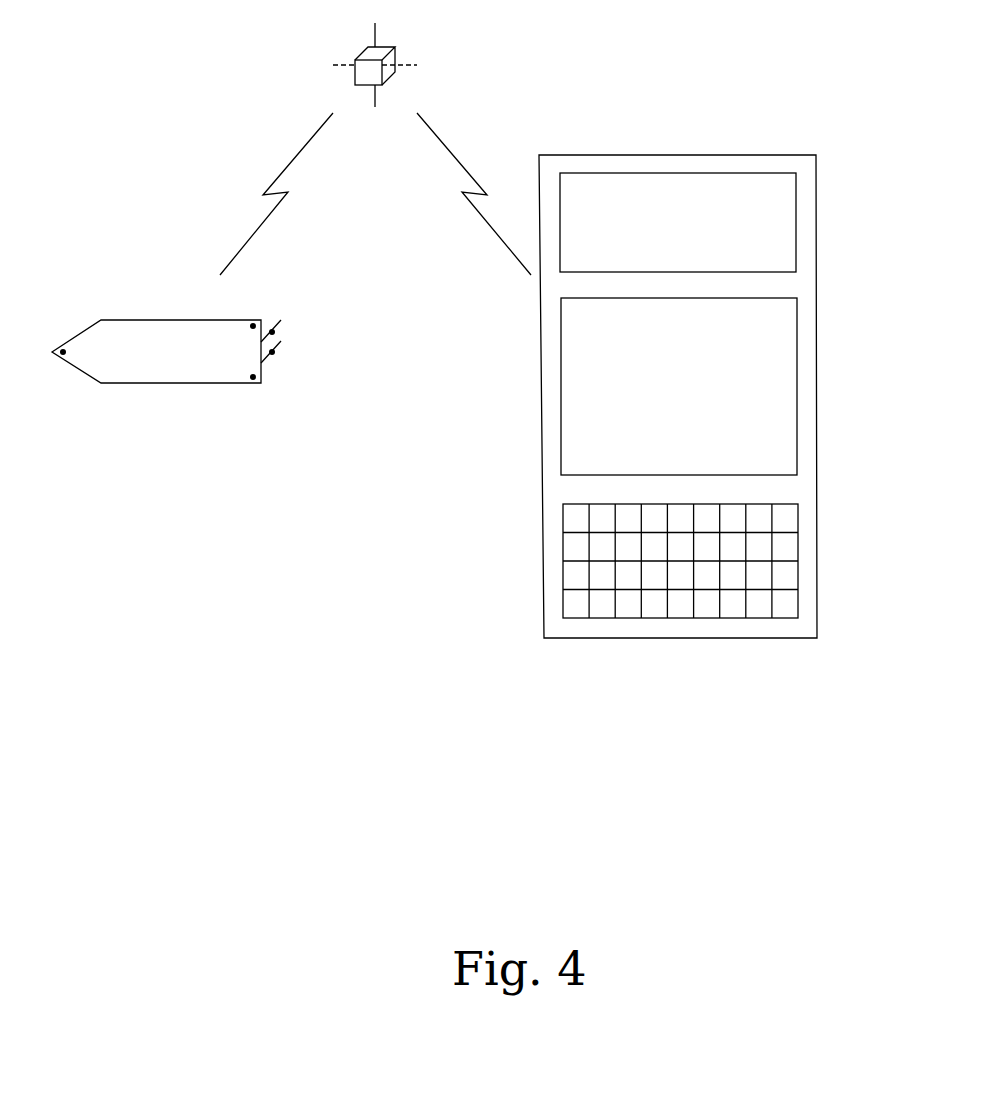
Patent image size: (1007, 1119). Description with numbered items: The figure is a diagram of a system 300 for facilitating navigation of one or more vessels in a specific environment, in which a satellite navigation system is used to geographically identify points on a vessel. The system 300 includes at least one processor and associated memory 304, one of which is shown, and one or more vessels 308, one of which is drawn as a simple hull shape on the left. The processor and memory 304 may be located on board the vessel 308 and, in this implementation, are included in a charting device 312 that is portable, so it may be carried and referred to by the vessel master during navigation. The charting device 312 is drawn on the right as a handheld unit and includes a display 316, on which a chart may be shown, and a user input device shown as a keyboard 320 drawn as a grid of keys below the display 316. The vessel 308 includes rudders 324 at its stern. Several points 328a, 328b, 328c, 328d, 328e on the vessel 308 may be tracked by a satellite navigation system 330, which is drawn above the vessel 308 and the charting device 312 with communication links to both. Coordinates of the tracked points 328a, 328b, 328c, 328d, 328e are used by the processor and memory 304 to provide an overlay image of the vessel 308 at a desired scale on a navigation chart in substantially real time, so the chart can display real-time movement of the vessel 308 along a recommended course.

The system for facilitating navigation 300 is at (229, 654).
The processor and memory 304 is at (675, 173).
The vessel 308 is at (148, 383).
The charting device 312 is at (816, 287).
The display 316 is at (797, 415).
The keyboard 320 is at (798, 577).
The rudders 324 is at (277, 352).
The point 328a is at (63, 350).
The point 328b is at (253, 324).
The point 328c is at (253, 379).
The point 328d is at (276, 355).
The point 328e is at (276, 332).
The satellite navigation system 330 is at (443, 58).